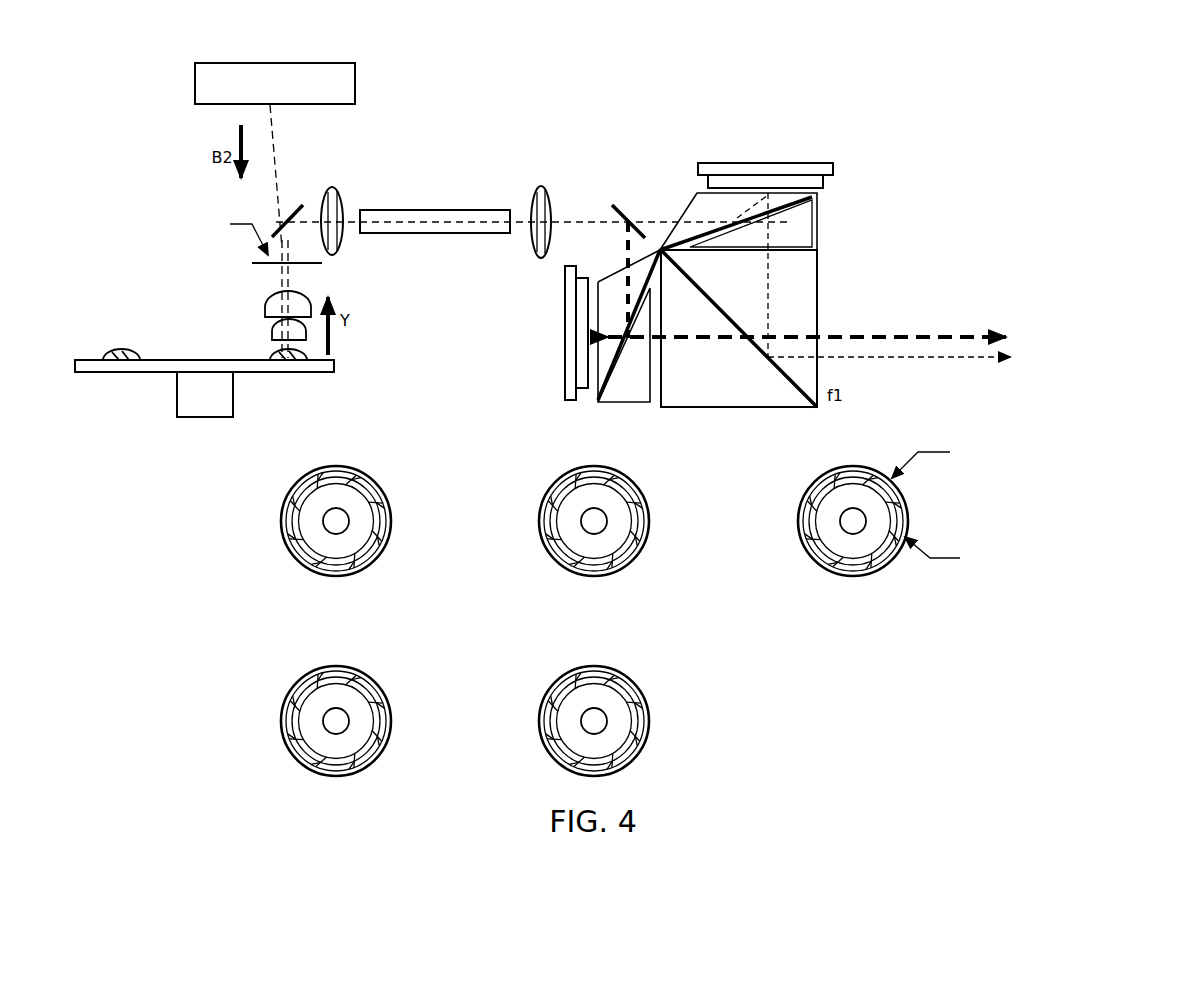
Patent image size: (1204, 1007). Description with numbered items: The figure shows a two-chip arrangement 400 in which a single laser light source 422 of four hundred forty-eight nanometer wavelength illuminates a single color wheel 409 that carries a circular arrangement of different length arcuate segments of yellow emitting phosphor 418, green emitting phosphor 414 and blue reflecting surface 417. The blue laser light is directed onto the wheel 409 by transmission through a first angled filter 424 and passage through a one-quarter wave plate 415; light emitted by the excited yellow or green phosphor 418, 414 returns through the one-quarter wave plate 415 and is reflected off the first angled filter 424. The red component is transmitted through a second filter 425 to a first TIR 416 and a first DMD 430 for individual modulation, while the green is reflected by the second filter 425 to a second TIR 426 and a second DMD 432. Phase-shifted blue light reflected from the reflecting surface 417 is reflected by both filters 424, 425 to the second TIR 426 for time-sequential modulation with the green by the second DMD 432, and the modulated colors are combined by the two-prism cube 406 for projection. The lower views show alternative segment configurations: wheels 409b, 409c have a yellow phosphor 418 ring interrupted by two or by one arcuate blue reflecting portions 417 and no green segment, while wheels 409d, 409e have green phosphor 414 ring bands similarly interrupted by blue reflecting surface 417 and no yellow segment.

The two-chip arrangement 400 is at (920, 122).
The two-prism cube 406 is at (820, 295).
The color wheel 409 is at (123, 374).
The wheel 409b is at (528, 534).
The wheel 409c is at (876, 580).
The wheel 409d is at (270, 733).
The wheel 409e is at (652, 729).
The green emitting phosphor 414 is at (108, 353).
The one-quarter wave plate 415 is at (258, 265).
The first TIR 416 is at (682, 207).
The blue reflecting surface 417 is at (283, 521).
The yellow emitting phosphor 418 is at (272, 352).
The laser light source 422 is at (195, 82).
The first angled filter 424 is at (293, 205).
The second filter 425 is at (630, 210).
The second TIR 426 is at (602, 280).
The first DMD 430 is at (770, 163).
The second DMD 432 is at (565, 328).